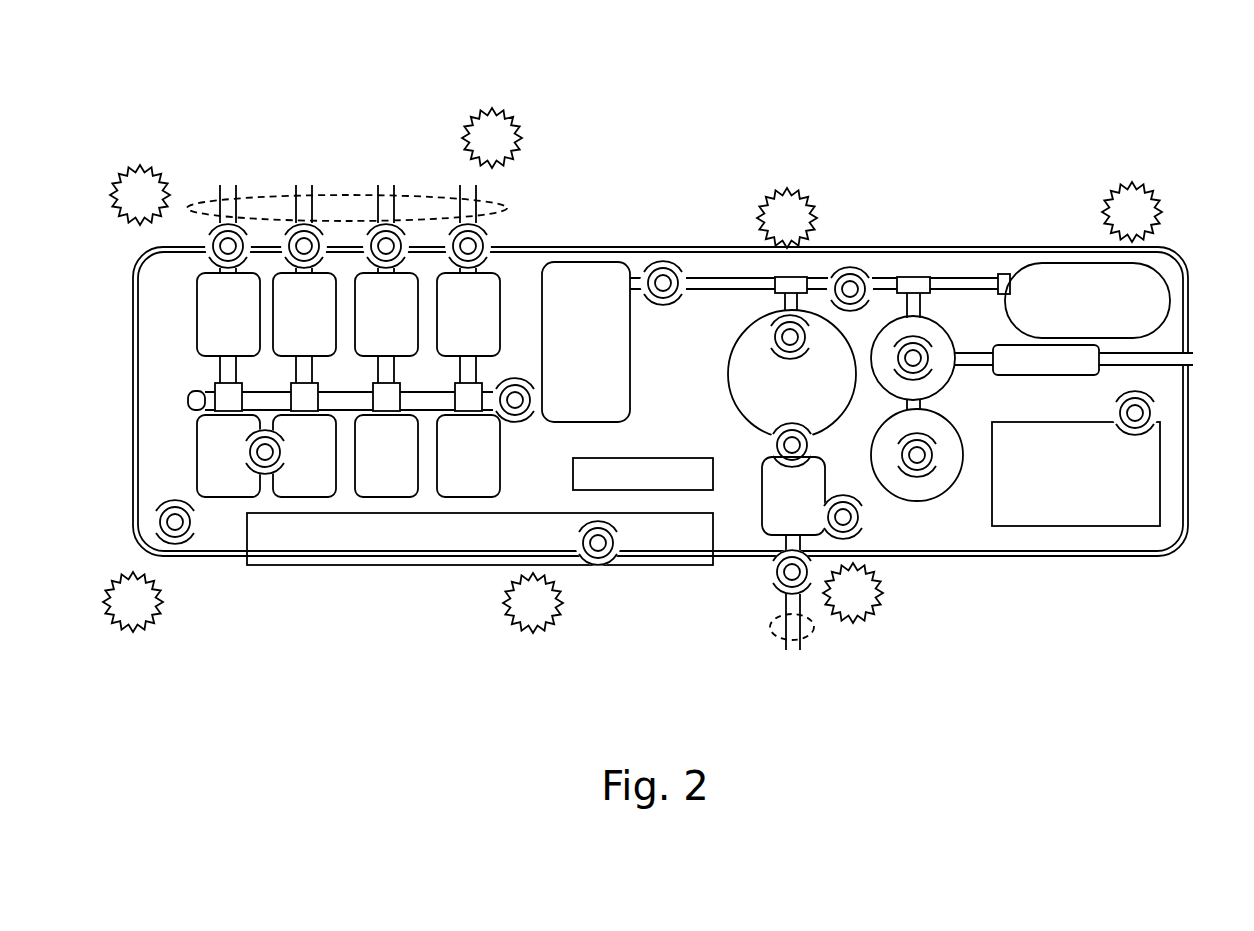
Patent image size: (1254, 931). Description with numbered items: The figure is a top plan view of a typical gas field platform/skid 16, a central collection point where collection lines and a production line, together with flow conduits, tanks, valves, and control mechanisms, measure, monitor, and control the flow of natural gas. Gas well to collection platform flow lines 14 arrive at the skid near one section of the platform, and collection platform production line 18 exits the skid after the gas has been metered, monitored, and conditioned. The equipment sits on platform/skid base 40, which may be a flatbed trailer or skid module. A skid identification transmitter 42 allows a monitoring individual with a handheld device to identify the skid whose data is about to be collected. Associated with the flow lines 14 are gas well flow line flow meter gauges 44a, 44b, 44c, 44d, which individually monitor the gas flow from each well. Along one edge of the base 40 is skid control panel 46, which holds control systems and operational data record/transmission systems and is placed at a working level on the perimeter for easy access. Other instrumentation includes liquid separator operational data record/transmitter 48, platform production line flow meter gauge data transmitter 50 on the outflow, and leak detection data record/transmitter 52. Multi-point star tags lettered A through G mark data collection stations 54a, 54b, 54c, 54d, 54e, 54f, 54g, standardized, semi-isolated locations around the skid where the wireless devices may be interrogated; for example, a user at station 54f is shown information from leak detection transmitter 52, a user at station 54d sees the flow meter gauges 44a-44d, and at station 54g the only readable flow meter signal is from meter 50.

The gas well to collection platform flow lines 14 is at (505, 207).
The gas field platform/skid 16 is at (687, 379).
The collection platform production line 18 is at (814, 627).
The platform/skid base 40 is at (724, 247).
The skid identification transmitter 42 is at (177, 545).
The gas well flow line flow meter gauge 44a is at (228, 222).
The gas well flow line flow meter gauge 44b is at (304, 222).
The gas well flow line flow meter gauge 44c is at (386, 222).
The gas well flow line flow meter gauge 44d is at (468, 222).
The skid control panel 46 is at (630, 545).
The liquid separator operational data record/transmitter 48 is at (850, 265).
The platform production line flow meter gauge data transmitter 50 is at (873, 520).
The leak detection data record/transmitter 52 is at (1162, 413).
The data collection station 54a is at (162, 623).
The data collection station 54b is at (563, 629).
The data collection station 54c is at (122, 170).
The data collection station 54d is at (463, 117).
The data collection station 54e is at (760, 197).
The data collection station 54f is at (1107, 184).
The data collection station 54g is at (880, 615).